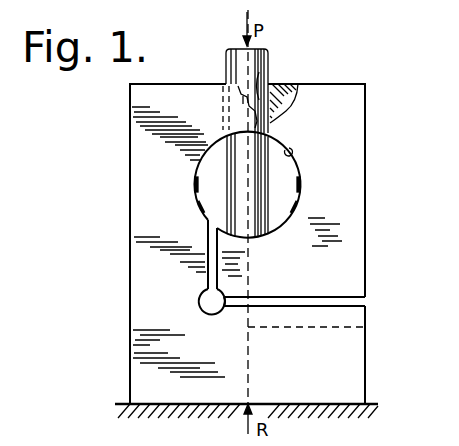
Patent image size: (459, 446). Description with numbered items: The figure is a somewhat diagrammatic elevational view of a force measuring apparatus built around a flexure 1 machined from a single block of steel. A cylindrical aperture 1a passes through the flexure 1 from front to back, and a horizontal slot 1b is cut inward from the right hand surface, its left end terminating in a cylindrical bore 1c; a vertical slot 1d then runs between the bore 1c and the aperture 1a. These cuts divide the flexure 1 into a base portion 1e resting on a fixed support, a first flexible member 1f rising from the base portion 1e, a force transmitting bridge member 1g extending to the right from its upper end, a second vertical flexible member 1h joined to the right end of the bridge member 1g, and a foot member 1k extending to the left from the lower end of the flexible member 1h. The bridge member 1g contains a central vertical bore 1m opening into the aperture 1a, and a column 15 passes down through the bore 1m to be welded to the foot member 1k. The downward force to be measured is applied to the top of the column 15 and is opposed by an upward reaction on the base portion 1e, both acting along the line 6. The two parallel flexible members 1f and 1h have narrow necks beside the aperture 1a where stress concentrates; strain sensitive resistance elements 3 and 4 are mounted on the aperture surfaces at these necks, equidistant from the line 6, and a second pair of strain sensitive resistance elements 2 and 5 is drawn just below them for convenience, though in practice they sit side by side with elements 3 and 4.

The flexure 1 is at (355, 363).
The cylindrical aperture 1a is at (289, 157).
The horizontal slot 1b is at (353, 304).
The cylindrical bore 1c is at (212, 298).
The vertical slot 1d is at (210, 256).
The base portion 1e is at (282, 372).
The first flexible member 1f is at (160, 168).
The force transmitting bridge member 1g is at (251, 123).
The second flexible member 1h is at (343, 187).
The foot member 1k is at (275, 281).
The central vertical bore 1m is at (262, 74).
The strain sensitive resistance element 2 is at (200, 205).
The strain sensitive resistance element 3 is at (195, 185).
The strain sensitive resistance element 4 is at (300, 185).
The strain sensitive resistance element 5 is at (296, 208).
The line of action 6 is at (365, 327).
The column 15 is at (226, 65).